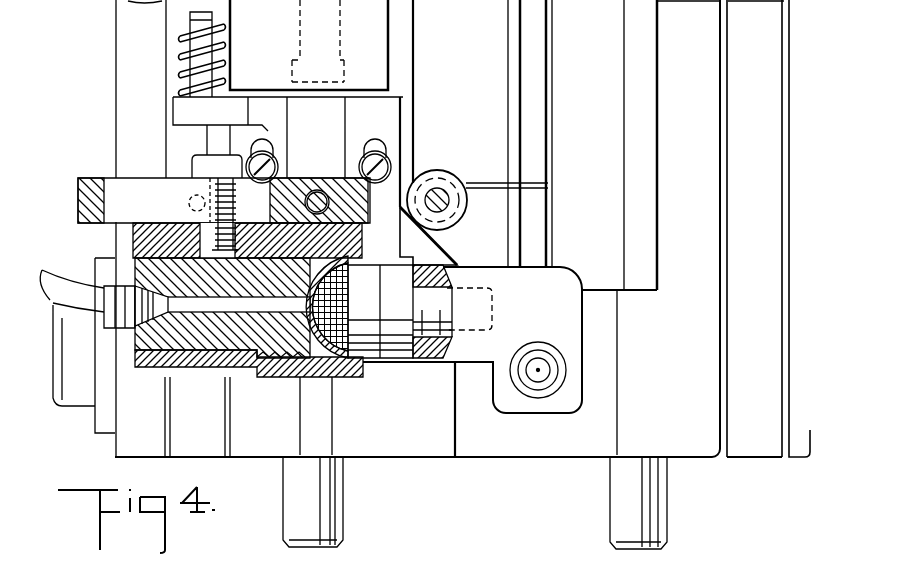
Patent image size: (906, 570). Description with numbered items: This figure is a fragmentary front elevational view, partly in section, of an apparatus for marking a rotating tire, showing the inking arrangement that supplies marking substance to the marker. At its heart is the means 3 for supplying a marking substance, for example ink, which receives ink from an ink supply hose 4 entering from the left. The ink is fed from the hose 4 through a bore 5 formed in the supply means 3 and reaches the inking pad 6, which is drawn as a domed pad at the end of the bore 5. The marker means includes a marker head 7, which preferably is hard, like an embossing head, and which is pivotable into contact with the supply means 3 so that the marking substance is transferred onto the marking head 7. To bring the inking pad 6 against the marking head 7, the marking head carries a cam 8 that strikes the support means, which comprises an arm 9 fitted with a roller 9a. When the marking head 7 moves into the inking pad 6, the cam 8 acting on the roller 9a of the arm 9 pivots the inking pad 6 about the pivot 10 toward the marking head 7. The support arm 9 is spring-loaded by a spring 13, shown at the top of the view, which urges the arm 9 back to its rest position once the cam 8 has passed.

The means for supplying a marking substance 3 is at (282, 375).
The ink supply hose 4 is at (66, 285).
The bore 5 is at (247, 292).
The inking pad 6 is at (353, 257).
The marker head 7 is at (374, 355).
The cam 8 is at (445, 258).
The arm 9 is at (403, 178).
The roller 9a is at (447, 175).
The pivot 10 is at (320, 178).
The spring 13 is at (180, 70).